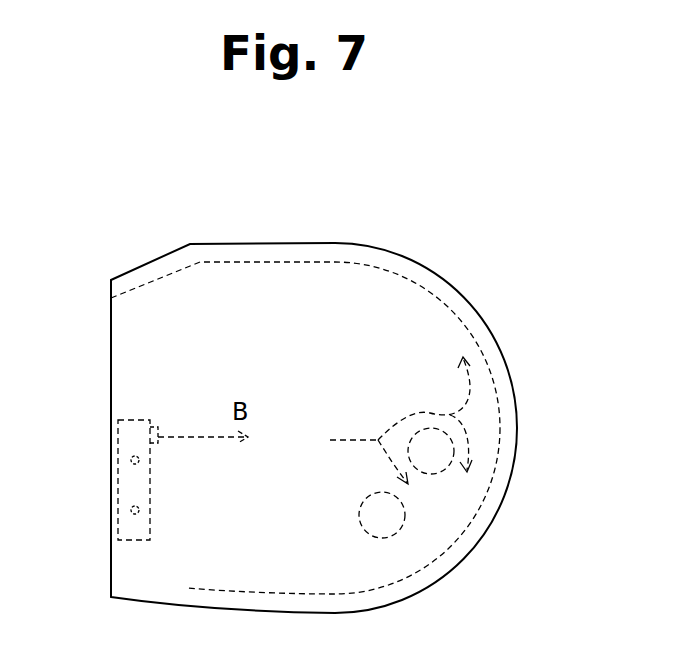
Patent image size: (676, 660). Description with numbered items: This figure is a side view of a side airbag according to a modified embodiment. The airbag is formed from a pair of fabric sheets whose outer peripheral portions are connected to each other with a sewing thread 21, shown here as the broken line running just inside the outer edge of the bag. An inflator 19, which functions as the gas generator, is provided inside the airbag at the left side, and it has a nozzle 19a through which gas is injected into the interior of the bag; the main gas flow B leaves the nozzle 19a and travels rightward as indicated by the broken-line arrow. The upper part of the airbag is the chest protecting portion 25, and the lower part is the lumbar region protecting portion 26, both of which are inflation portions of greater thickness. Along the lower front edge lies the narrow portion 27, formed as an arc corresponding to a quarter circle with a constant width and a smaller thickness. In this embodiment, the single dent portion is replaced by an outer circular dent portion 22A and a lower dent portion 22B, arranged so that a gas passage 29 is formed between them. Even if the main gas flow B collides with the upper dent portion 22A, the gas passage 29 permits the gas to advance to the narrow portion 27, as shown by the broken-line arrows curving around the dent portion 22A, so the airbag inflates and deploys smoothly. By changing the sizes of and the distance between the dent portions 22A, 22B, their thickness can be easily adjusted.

The inflator 19 is at (127, 533).
The nozzle 19a is at (155, 425).
The sewing thread 21 is at (472, 334).
The outer dent portion 22A is at (420, 430).
The lower dent portion 22B is at (362, 528).
The chest protecting portion 25 is at (325, 325).
The lumbar region protecting portion 26 is at (250, 567).
The narrow portion 27 is at (398, 532).
The gas passage 29 is at (385, 480).